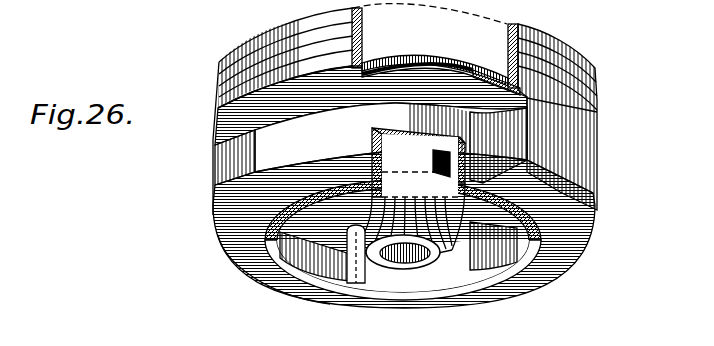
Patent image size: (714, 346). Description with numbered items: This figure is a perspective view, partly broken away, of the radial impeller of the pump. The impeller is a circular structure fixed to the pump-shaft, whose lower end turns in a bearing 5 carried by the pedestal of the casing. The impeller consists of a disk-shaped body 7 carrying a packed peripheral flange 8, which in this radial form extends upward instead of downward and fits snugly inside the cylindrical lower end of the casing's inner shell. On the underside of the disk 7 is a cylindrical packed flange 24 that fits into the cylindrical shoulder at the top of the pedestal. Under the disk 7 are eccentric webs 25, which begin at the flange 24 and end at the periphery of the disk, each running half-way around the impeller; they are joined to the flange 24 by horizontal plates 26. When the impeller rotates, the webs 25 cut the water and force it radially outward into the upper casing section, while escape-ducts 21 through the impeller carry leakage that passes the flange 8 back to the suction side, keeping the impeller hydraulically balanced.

The bearing 5 is at (415, 58).
The disk-shaped body 7 is at (476, 80).
The peripheral flange 8 is at (563, 117).
The escape-ducts 21 is at (424, 156).
The cylindrical packed flange 24 is at (360, 277).
The eccentric webs 25 is at (404, 148).
The horizontal plates 26 is at (226, 237).